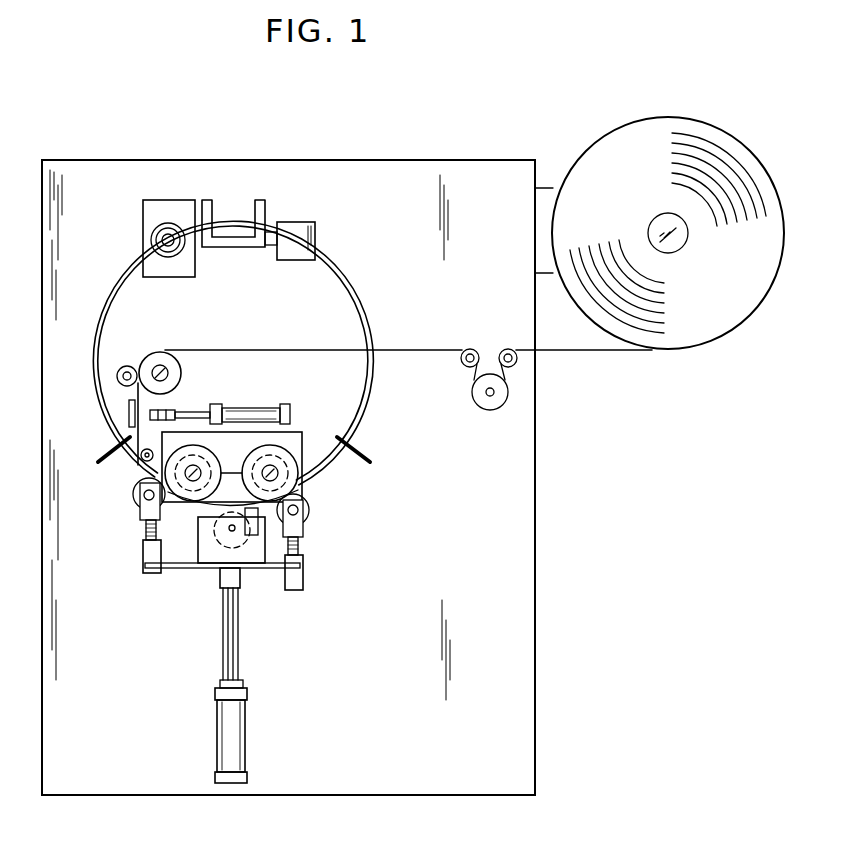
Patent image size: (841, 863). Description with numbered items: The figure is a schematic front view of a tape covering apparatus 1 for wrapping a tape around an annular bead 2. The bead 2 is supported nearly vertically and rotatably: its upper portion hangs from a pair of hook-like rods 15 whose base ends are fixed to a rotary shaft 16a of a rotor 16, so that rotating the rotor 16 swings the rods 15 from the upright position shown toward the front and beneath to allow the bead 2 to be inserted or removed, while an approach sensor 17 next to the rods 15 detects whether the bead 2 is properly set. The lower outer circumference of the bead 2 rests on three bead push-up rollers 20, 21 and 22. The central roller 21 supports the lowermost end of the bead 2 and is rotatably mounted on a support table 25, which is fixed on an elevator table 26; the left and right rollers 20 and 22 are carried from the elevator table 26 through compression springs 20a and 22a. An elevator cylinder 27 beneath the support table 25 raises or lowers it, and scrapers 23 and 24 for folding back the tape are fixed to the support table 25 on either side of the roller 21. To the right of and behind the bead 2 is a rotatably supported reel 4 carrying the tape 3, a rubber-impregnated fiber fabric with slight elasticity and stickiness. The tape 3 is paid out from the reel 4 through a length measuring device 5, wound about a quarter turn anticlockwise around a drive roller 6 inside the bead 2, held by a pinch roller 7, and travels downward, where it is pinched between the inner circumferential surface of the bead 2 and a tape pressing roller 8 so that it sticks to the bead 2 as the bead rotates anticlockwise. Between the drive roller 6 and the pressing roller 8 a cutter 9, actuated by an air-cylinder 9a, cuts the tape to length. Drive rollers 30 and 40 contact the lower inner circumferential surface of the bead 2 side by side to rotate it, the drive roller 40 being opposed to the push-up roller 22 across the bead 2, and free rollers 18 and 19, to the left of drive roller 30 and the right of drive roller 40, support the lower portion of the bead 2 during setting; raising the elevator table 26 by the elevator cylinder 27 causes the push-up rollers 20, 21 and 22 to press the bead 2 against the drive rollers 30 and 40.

The tape covering apparatus 1 is at (100, 160).
The annular bead 2 is at (352, 288).
The tape 3 is at (432, 350).
The reel 4 is at (676, 244).
The length measuring device 5 is at (490, 356).
The drive roller 6 is at (162, 365).
The pinch roller 7 is at (127, 366).
The tape pressing roller 8 is at (143, 460).
The cutter 9 is at (172, 412).
The air-cylinder 9a is at (244, 405).
The hook-like rods 15 is at (258, 200).
The rotor 16 is at (318, 238).
The rotary shaft 16a is at (270, 250).
The approach sensor 17 is at (148, 232).
The free roller 18 is at (98, 455).
The free roller 19 is at (372, 455).
The bead push-up roller 20 is at (138, 496).
The compression spring 20a is at (143, 547).
The bead push-up roller 21 is at (222, 580).
The bead push-up roller 22 is at (300, 500).
The compression spring 22a is at (302, 560).
The scraper 23 is at (198, 560).
The scraper 24 is at (302, 515).
The support table 25 is at (270, 568).
The elevator table 26 is at (238, 580).
The elevator cylinder 27 is at (246, 738).
The drive roller 30 is at (183, 483).
The drive roller 40 is at (296, 446).